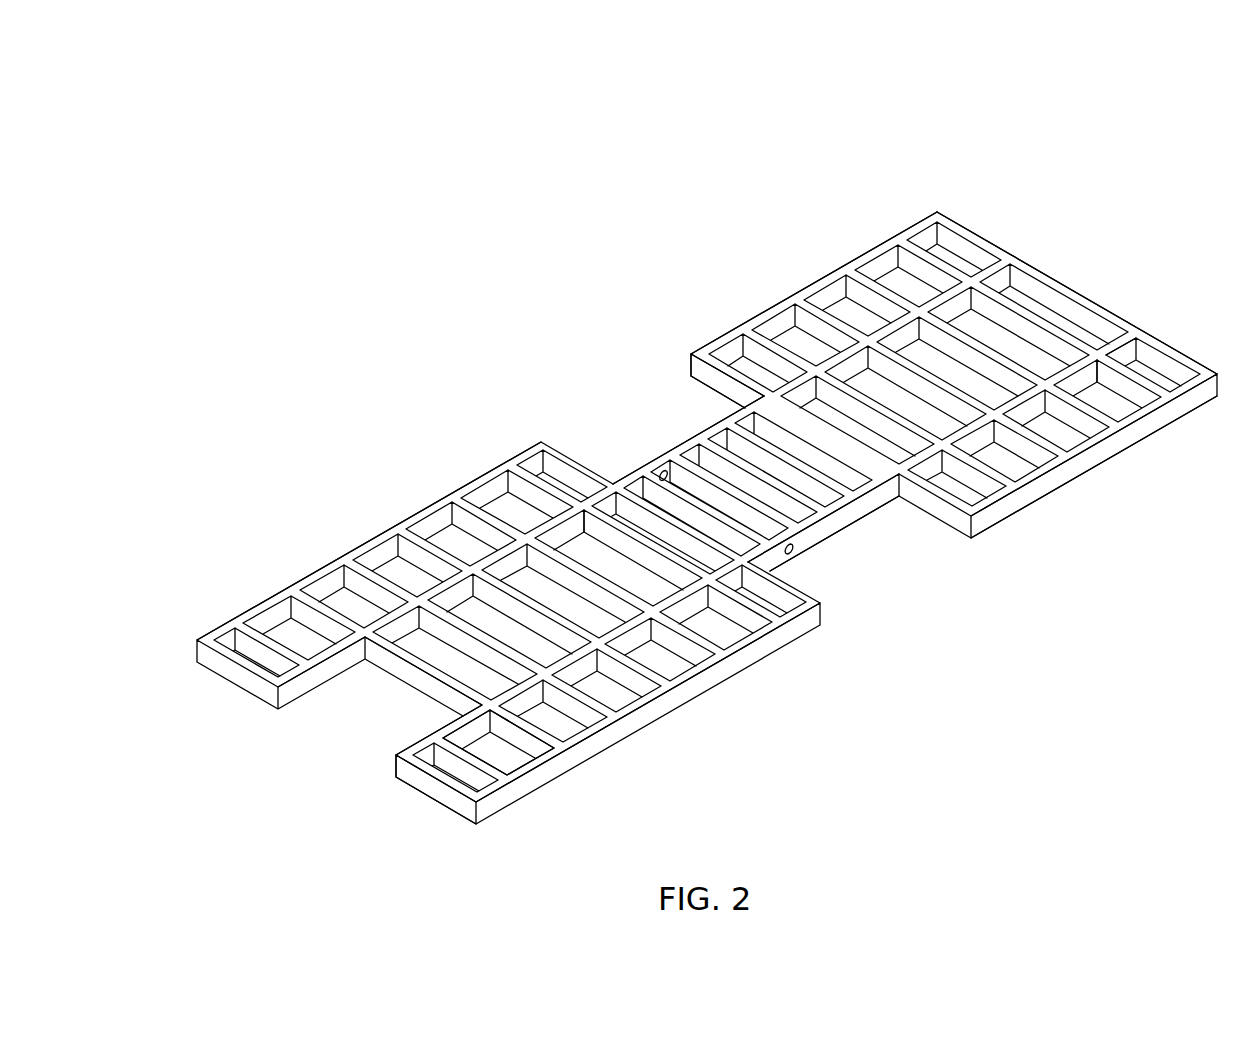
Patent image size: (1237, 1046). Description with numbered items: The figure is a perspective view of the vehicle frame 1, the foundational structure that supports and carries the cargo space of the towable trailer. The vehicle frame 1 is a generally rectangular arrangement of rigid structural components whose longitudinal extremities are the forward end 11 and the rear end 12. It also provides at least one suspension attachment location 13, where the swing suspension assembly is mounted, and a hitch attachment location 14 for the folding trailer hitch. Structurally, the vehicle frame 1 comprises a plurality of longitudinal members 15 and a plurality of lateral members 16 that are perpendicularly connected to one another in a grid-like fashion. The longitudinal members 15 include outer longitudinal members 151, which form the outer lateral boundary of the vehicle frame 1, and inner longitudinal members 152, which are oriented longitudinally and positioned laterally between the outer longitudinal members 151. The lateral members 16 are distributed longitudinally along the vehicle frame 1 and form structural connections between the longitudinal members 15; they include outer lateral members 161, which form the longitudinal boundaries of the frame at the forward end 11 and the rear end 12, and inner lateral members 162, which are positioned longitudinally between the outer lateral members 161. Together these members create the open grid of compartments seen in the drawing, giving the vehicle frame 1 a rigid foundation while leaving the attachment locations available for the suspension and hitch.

The vehicle frame 1 is at (705, 458).
The forward end 11 is at (198, 578).
The rear end 12 is at (922, 176).
The suspension attachment location 13 is at (834, 564).
The hitch attachment location 14 is at (311, 738).
The longitudinal members 15 is at (690, 440).
The outer longitudinal members 151 is at (815, 272).
The inner longitudinal members 152 is at (865, 520).
The lateral members 16 is at (720, 365).
The outer lateral members 161 is at (1080, 290).
The inner lateral members 162 is at (1137, 380).